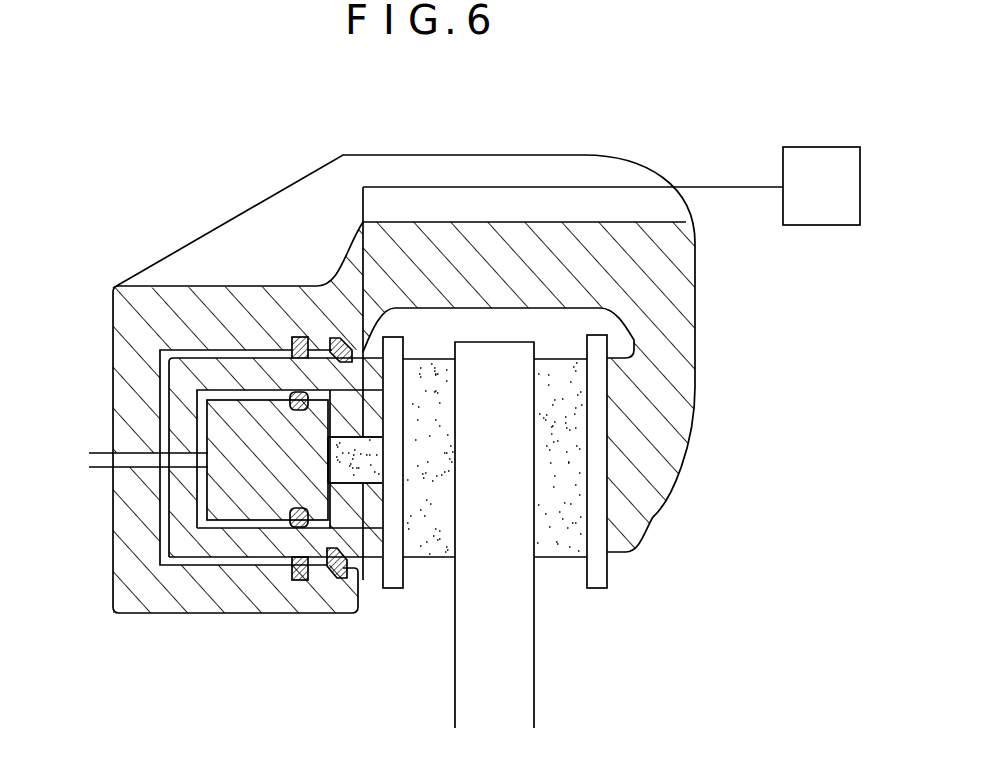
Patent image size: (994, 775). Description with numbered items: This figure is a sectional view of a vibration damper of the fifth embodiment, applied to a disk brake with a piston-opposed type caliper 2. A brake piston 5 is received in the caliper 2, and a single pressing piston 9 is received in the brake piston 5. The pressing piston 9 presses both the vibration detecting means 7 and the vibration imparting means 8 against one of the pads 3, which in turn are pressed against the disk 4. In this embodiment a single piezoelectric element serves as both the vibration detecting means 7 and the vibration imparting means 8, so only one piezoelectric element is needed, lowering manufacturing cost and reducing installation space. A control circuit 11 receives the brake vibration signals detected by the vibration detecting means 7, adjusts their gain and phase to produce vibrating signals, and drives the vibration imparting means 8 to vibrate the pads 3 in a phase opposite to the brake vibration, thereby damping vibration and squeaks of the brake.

The caliper 2 is at (147, 308).
The pad 3 is at (430, 565).
The disk 4 is at (508, 685).
The brake piston 5 is at (177, 387).
The vibration detecting means 7 is at (351, 568).
The vibration imparting means 8 is at (363, 475).
The pressing piston 9 is at (237, 503).
The control circuit 11 is at (822, 165).